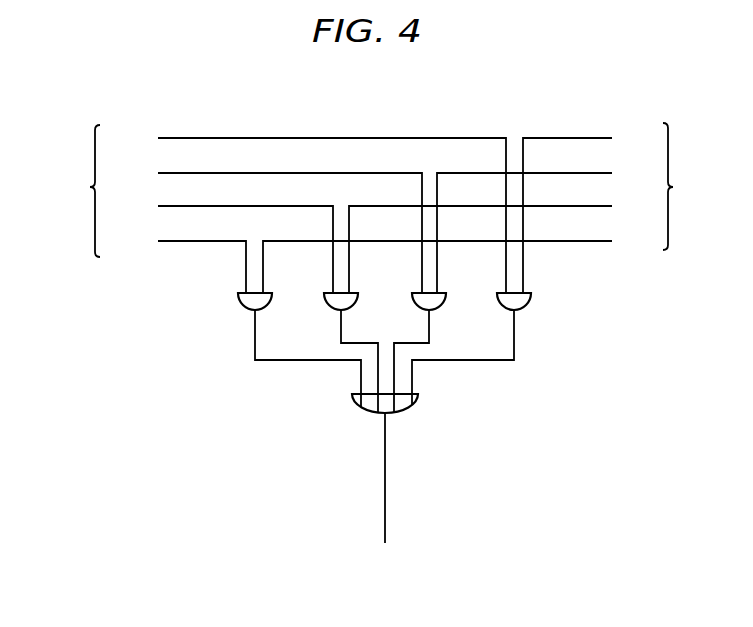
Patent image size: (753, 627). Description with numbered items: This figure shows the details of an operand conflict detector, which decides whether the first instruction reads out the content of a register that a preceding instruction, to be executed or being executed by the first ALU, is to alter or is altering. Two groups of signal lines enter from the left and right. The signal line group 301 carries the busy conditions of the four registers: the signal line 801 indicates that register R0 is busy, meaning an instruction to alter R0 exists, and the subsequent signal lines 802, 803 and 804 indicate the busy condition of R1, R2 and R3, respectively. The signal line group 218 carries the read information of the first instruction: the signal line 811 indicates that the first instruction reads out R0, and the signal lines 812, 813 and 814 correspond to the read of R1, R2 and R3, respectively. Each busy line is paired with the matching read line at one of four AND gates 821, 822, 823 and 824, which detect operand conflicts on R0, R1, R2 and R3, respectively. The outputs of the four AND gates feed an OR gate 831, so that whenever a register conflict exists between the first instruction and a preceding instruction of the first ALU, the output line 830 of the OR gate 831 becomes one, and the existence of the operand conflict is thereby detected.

The signal line group 301 is at (76, 191).
The signal line group 218 is at (690, 186).
The signal line 801 is at (305, 209).
The signal line 802 is at (263, 226).
The signal line 803 is at (219, 243).
The signal line 804 is at (175, 261).
The signal line 811 is at (591, 208).
The signal line 812 is at (548, 226).
The signal line 813 is at (504, 242).
The signal line 814 is at (461, 260).
The AND gate 821 is at (498, 293).
The AND gate 822 is at (414, 293).
The AND gate 823 is at (328, 293).
The AND gate 824 is at (240, 293).
The OR gate 831 is at (400, 412).
The output line 830 is at (388, 494).